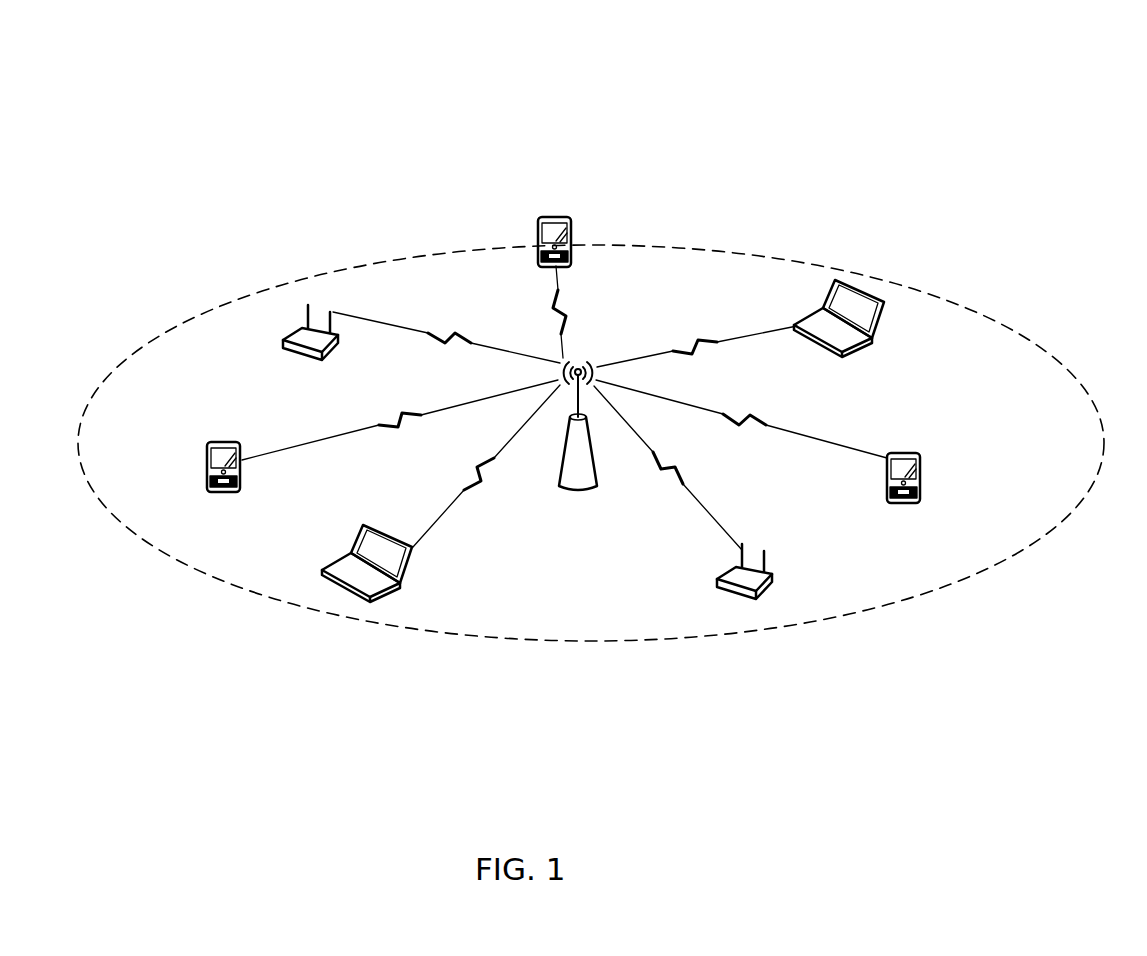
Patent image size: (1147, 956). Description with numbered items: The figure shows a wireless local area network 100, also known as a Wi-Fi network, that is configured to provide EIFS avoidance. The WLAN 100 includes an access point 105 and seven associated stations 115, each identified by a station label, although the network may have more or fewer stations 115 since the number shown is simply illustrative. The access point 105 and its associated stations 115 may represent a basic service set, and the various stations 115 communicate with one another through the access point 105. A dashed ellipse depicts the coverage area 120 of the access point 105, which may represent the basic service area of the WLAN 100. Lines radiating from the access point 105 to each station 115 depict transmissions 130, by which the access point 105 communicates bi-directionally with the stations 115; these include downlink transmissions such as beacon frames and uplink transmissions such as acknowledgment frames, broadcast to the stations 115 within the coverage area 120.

The wireless local area network 100 is at (1046, 104).
The access point 105 is at (597, 488).
The stations 115 is at (300, 328).
The coverage area 120 is at (822, 264).
The transmissions 130 is at (480, 346).